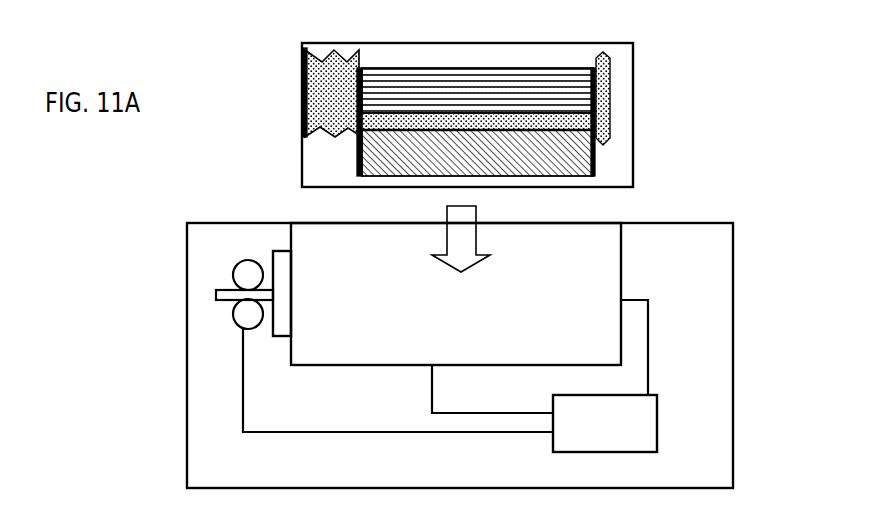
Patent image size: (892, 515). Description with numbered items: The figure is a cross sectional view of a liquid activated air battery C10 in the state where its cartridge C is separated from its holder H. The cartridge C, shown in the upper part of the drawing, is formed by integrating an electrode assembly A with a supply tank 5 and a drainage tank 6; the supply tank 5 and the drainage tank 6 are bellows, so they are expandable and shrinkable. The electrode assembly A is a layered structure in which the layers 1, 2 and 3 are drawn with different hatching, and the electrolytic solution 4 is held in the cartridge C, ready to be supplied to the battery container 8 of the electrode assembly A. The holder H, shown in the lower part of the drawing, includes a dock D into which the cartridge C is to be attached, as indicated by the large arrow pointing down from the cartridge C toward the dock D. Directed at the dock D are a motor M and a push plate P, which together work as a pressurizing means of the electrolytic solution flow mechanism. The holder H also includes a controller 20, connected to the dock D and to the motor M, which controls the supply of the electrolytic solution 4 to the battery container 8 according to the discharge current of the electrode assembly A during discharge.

The positive electrode layer 1 is at (462, 85).
The negative electrode layer 2 is at (548, 155).
The separator layer 3 is at (505, 120).
The electrolytic solution 4 is at (331, 75).
The supply tank 5 is at (302, 50).
The drainage tank 6 is at (604, 80).
The battery container 8 is at (361, 66).
The electrode assembly A is at (478, 88).
The cartridge C is at (636, 98).
The liquid activated air battery C10 is at (743, 162).
The dock D is at (595, 262).
The motor M is at (245, 278).
The push plate P is at (268, 333).
The holder H is at (713, 400).
The controller 20 is at (450, 376).